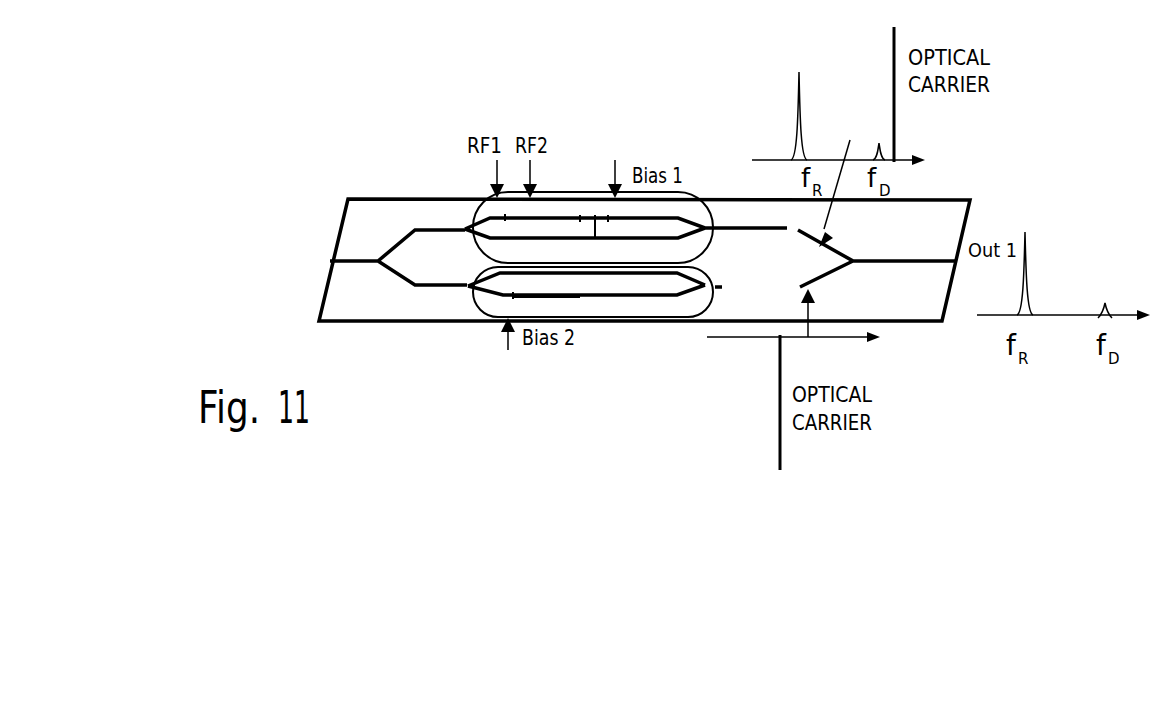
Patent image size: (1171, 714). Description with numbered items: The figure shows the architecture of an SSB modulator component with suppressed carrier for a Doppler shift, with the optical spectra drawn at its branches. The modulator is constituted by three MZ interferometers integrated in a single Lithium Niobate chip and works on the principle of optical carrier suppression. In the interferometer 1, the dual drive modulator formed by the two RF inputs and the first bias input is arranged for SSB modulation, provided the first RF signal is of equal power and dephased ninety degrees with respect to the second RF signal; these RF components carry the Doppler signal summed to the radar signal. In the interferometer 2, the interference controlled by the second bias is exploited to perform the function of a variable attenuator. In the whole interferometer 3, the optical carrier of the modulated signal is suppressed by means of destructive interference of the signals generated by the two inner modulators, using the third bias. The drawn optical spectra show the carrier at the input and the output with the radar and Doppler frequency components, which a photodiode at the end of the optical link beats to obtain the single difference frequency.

The interferometer 1 is at (563, 192).
The interferometer 2 is at (637, 318).
The whole interferometer 3 is at (789, 150).